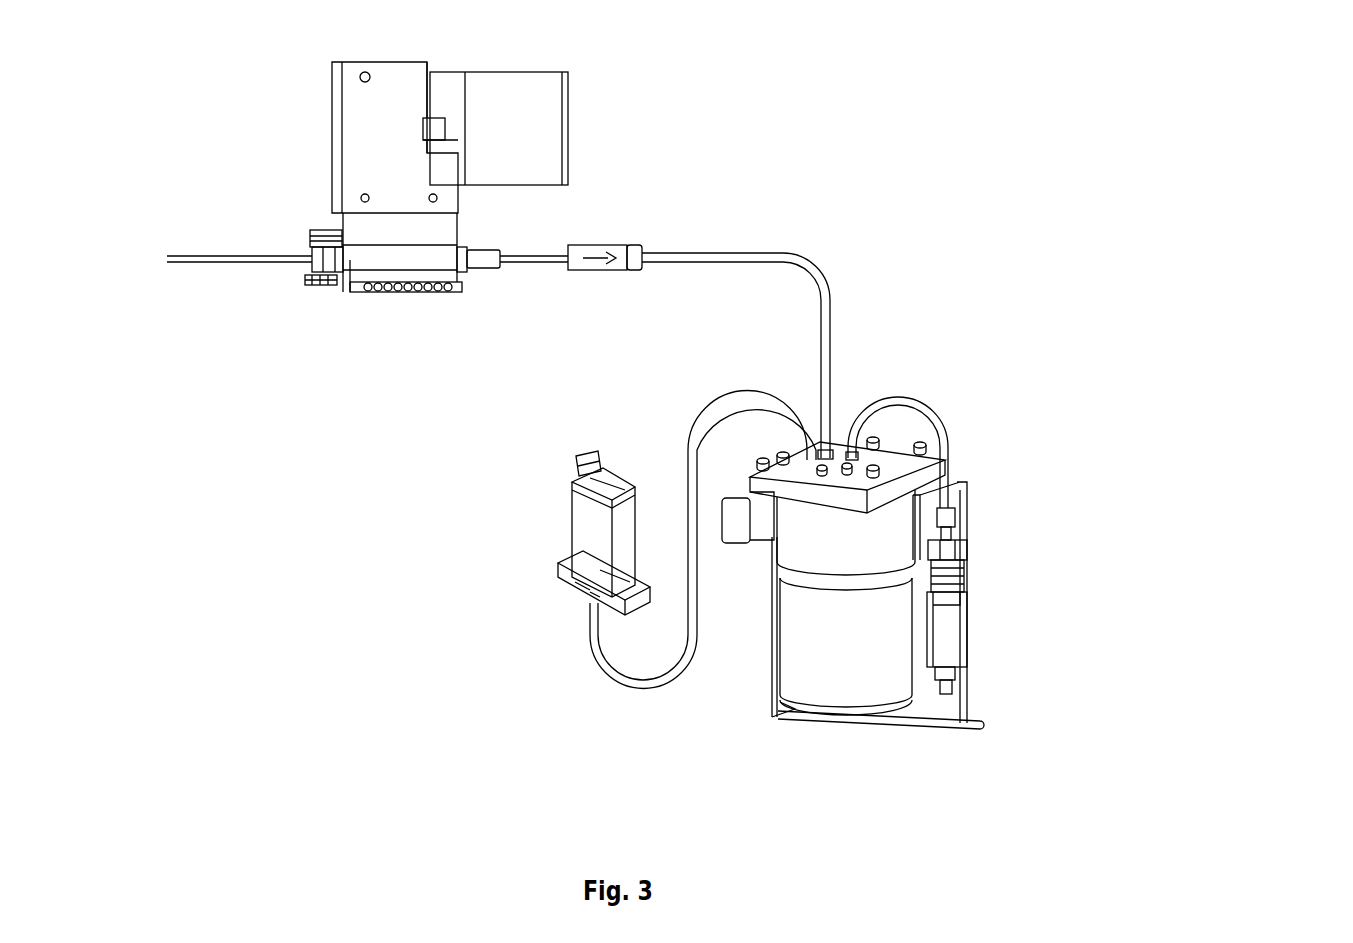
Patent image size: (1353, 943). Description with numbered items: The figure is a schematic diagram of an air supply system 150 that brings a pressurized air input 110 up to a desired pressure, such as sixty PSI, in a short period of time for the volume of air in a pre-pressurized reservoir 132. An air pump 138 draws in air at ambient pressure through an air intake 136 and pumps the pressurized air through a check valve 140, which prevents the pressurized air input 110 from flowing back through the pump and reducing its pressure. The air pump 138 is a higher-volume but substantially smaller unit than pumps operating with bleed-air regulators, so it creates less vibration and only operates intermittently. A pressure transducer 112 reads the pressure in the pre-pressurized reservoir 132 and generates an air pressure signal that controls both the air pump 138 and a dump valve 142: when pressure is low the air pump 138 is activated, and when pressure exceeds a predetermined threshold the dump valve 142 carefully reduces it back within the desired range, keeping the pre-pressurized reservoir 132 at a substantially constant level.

The air supply system 150 is at (1105, 87).
The air intake 136 is at (250, 257).
The air pump 138 is at (363, 268).
The check valve 140 is at (578, 263).
The pressurized air input 110 is at (812, 227).
The dump valve 142 is at (593, 562).
The pre-pressurized reservoir 132 is at (792, 645).
The pressure transducer 112 is at (960, 620).